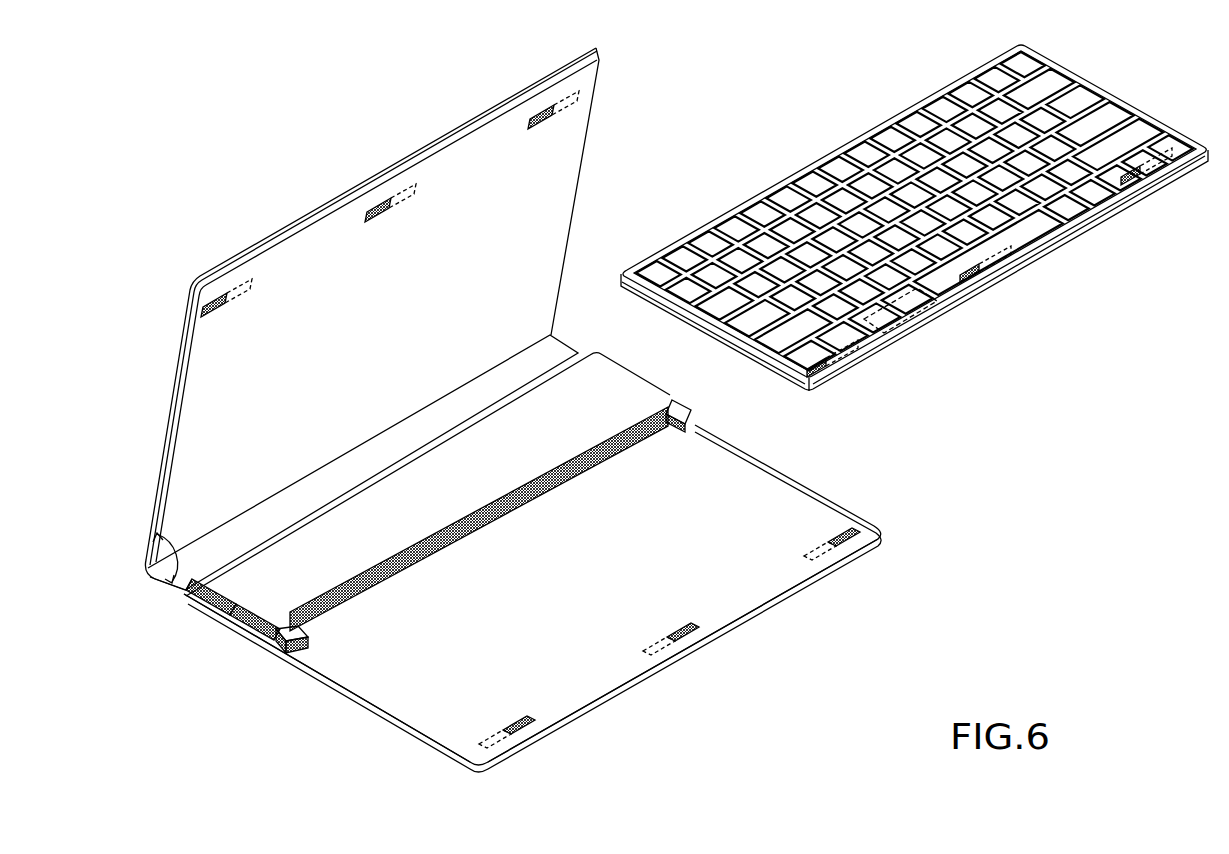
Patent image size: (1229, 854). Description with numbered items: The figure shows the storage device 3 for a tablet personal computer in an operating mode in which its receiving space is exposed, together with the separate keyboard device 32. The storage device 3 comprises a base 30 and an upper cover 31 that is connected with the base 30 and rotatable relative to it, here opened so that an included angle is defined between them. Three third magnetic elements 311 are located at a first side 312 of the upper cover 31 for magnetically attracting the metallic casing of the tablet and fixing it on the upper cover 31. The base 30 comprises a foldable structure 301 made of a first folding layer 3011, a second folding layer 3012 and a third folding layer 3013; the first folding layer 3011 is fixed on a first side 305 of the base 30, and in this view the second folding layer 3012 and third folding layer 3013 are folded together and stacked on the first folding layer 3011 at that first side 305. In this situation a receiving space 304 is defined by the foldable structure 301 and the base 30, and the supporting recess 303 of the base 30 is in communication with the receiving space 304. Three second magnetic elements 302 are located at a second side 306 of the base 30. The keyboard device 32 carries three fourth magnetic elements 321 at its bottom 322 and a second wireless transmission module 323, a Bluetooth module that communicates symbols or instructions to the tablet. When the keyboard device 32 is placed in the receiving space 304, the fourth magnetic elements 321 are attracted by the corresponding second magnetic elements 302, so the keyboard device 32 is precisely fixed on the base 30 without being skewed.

The storage device 3 is at (518, 419).
The upper cover 31 is at (372, 319).
The third magnetic elements 311 is at (552, 106).
The first side of the upper cover 312 is at (477, 148).
The base 30 is at (518, 572).
The foldable structure 301 is at (231, 667).
The first folding layer 3011 is at (277, 669).
The second folding layer 3012 is at (252, 636).
The third folding layer 3013 is at (223, 619).
The second magnetic elements 302 is at (536, 745).
The supporting recess 303 is at (370, 604).
The receiving space 304 is at (406, 694).
The first side of the base 305 is at (190, 601).
The second side of the base 306 is at (577, 695).
The keyboard device 32 is at (918, 232).
The fourth magnetic elements 321 is at (840, 366).
The bottom of the keyboard device 322 is at (777, 381).
The second wireless transmission module 323 is at (920, 321).